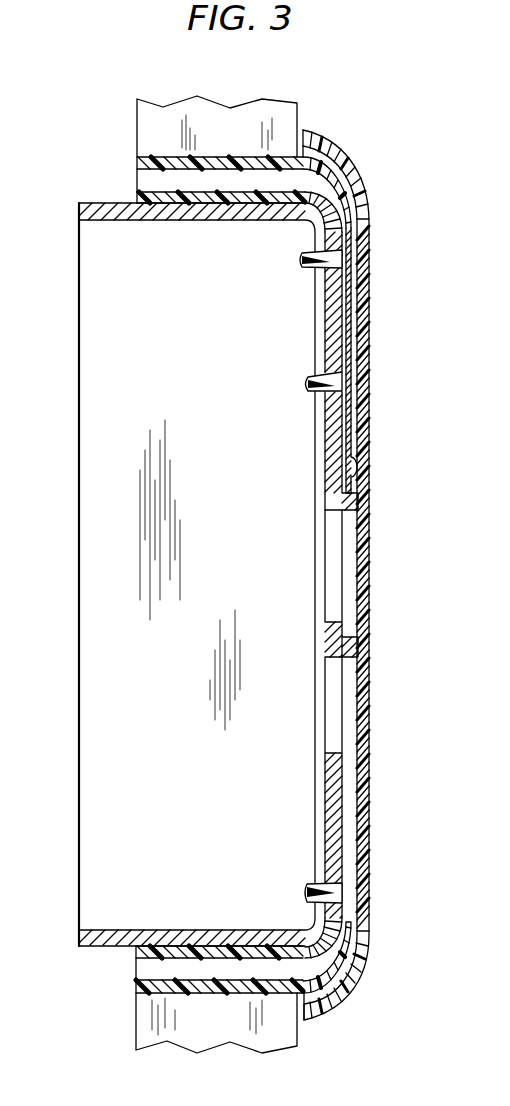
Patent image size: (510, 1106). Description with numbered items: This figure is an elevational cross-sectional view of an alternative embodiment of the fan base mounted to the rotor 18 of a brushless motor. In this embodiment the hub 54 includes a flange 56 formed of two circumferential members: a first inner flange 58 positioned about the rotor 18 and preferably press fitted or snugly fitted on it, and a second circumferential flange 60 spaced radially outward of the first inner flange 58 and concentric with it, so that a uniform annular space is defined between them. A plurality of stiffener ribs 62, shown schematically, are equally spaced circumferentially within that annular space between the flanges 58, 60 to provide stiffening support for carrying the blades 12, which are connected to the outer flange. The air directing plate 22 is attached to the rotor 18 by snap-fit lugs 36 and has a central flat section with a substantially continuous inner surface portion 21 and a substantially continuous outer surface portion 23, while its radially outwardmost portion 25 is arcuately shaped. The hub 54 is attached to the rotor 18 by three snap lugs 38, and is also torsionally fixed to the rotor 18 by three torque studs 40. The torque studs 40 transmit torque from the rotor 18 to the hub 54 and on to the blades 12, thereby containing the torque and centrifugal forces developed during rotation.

The blades 12 is at (224, 134).
The rotor 18 is at (121, 221).
The inner surface portion 21 is at (370, 478).
The air directing plate 22 is at (370, 735).
The outer surface portion 23 is at (370, 433).
The radially outwardmost portion 25 is at (364, 194).
The snap-fit lugs 36 is at (350, 370).
The snap-fit lugs 38 is at (341, 225).
The torque studs 40 is at (337, 883).
The hub 54 is at (310, 182).
The flange 56 is at (233, 156).
The first inner flange 58 is at (150, 193).
The second circumferential flange 60 is at (170, 157).
The stiffener ribs 62 is at (242, 188).